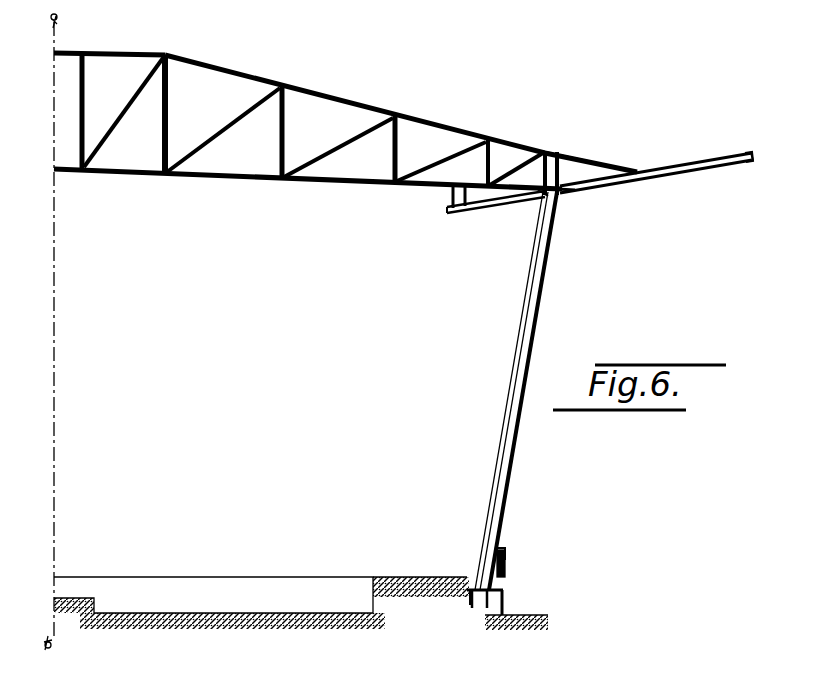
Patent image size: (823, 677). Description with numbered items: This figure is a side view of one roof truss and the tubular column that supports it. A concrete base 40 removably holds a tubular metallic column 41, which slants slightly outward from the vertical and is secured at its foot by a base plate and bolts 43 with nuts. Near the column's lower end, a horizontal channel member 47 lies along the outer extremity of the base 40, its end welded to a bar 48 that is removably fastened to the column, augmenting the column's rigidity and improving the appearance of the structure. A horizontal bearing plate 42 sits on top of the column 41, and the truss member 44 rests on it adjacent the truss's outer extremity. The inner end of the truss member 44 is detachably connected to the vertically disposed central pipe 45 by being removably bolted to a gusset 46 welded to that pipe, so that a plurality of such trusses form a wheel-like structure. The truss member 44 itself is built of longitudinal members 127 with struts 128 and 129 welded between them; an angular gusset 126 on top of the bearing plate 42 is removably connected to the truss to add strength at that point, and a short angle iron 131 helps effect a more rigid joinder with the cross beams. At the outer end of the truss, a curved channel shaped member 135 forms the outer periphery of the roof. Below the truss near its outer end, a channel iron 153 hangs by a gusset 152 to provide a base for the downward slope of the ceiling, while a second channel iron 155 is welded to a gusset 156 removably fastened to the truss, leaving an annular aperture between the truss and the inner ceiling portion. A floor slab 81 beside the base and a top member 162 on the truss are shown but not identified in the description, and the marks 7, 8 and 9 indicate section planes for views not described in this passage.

The base 40 is at (385, 577).
The tubular metallic column 41 is at (515, 388).
The horizontal bearing plate 42 is at (538, 198).
The bolts 43 is at (468, 602).
The truss member 44 is at (208, 178).
The central pipe 45 is at (66, 172).
The gusset 46 is at (87, 70).
The horizontal channel member 47 is at (505, 548).
The bar 48 is at (506, 560).
The slab 81 is at (208, 588).
The angular gusset 126 is at (558, 157).
The longitudinal member 127 is at (192, 68).
The strut 128 is at (208, 137).
The strut 129 is at (172, 123).
The short angle iron 131 is at (400, 120).
The curved channel shaped member 135 is at (753, 163).
The gusset 152 is at (598, 175).
The channel iron 153 is at (567, 193).
The channel iron 155 is at (462, 214).
The gusset 156 is at (443, 197).
The top member 162 is at (102, 53).
The section line 7- 7 is at (416, 136).
The section line 8- 8 is at (433, 125).
The section line 9- 9 is at (580, 168).